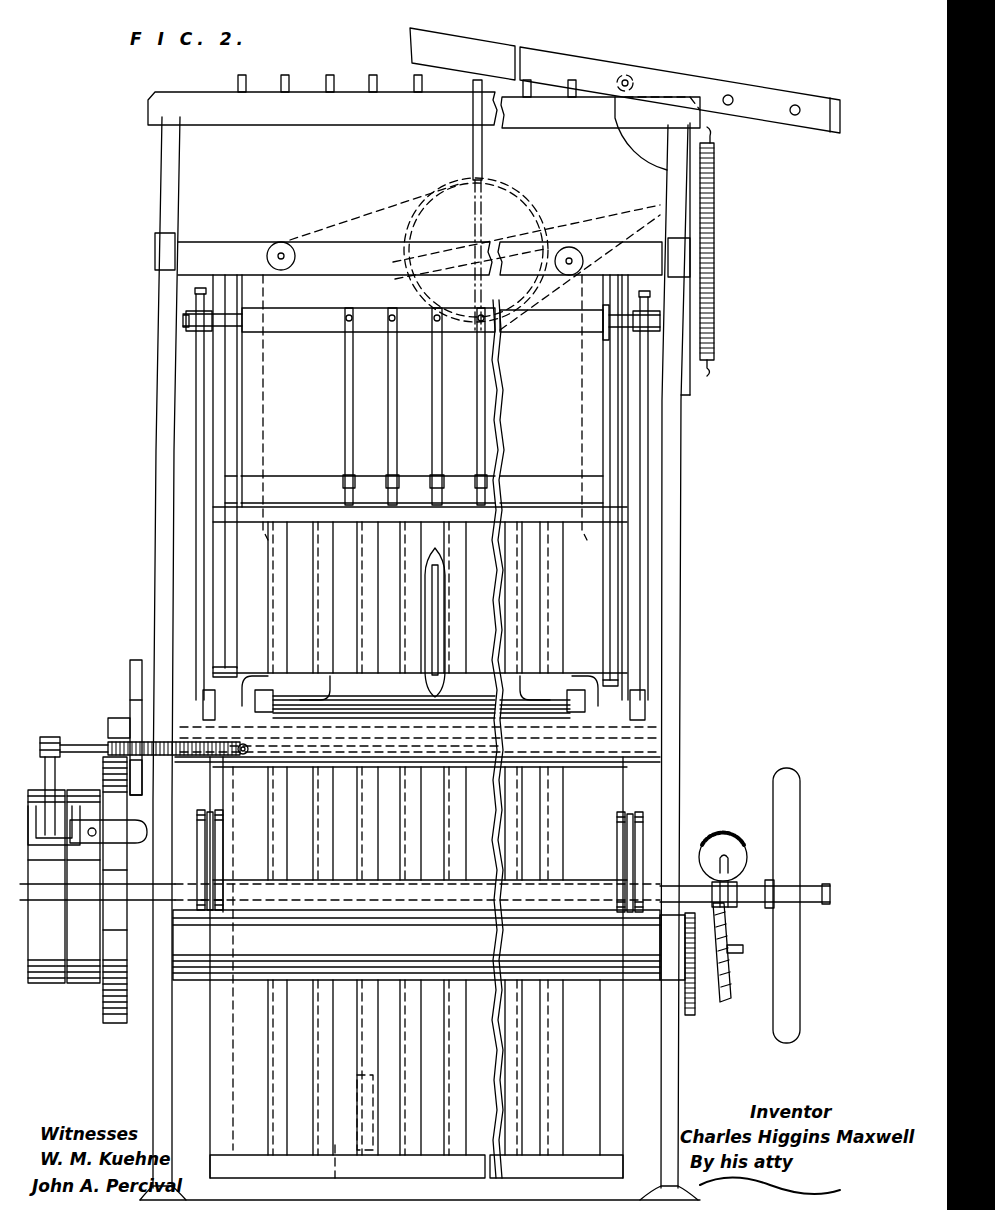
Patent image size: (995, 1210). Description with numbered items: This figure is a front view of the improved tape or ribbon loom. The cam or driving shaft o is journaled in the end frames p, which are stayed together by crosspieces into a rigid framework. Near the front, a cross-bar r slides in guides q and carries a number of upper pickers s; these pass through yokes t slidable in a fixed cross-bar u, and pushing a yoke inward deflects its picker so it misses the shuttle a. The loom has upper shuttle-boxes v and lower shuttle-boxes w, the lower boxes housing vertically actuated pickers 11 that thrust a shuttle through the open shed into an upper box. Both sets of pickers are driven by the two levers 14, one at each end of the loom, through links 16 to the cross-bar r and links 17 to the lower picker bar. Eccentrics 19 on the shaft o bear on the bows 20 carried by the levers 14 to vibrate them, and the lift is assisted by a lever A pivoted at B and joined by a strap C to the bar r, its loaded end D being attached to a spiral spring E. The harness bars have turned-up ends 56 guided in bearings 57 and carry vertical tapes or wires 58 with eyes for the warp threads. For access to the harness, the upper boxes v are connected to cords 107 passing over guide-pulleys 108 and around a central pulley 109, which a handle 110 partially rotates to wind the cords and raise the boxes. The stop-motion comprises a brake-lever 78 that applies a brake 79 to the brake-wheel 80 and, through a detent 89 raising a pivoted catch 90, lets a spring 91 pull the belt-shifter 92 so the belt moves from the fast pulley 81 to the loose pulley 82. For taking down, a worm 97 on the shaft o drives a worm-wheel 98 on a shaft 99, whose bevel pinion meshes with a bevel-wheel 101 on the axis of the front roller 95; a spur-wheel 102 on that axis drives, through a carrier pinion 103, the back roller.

The lever A is at (553, 64).
The pivot B is at (630, 76).
The strap C is at (483, 158).
The loaded end of lever D is at (785, 100).
The spiral spring E is at (716, 218).
The end frames p is at (152, 284).
The links or rods 16 is at (195, 371).
The cords 107 is at (266, 416).
The guide-pulleys 108 is at (296, 257).
The central pulley 109 is at (528, 203).
The handle 110 is at (623, 216).
The guides q is at (230, 461).
The cross-bar r is at (316, 326).
The pickers s is at (356, 399).
The yokes t is at (354, 476).
The fixed cross-bar u is at (414, 489).
The upper shuttle-boxes v is at (420, 590).
The shuttle a is at (425, 600).
The turned-up ends 56 is at (338, 684).
The bearings 57 is at (262, 676).
The harness tapes or wires 58 is at (388, 688).
The levers 14 is at (205, 696).
The brake-lever 78 is at (130, 678).
The brake 79 is at (118, 731).
The spring 91 is at (140, 757).
The belt-shifter 92 is at (57, 773).
The detent 89 is at (142, 791).
The pivoted catch 90 is at (147, 833).
The loose pulley 82 is at (46, 886).
The fast pulley 81 is at (83, 886).
The brake pulley or wheel 80 is at (103, 1003).
The cam or driving shaft o is at (141, 898).
The links 17 is at (205, 813).
The frame or bow 20 is at (213, 850).
The eccentrics 19 is at (210, 862).
The lower shuttle-boxes w is at (420, 972).
The lower pickers 11 is at (432, 770).
The roller 95 is at (258, 982).
The spur-wheel 102 is at (686, 927).
The intermediate or carrier pinion 103 is at (696, 1012).
The bevel-wheel 101 is at (730, 975).
The worm-wheel 98 is at (736, 826).
The shaft 99 is at (720, 868).
The worm 97 is at (742, 888).